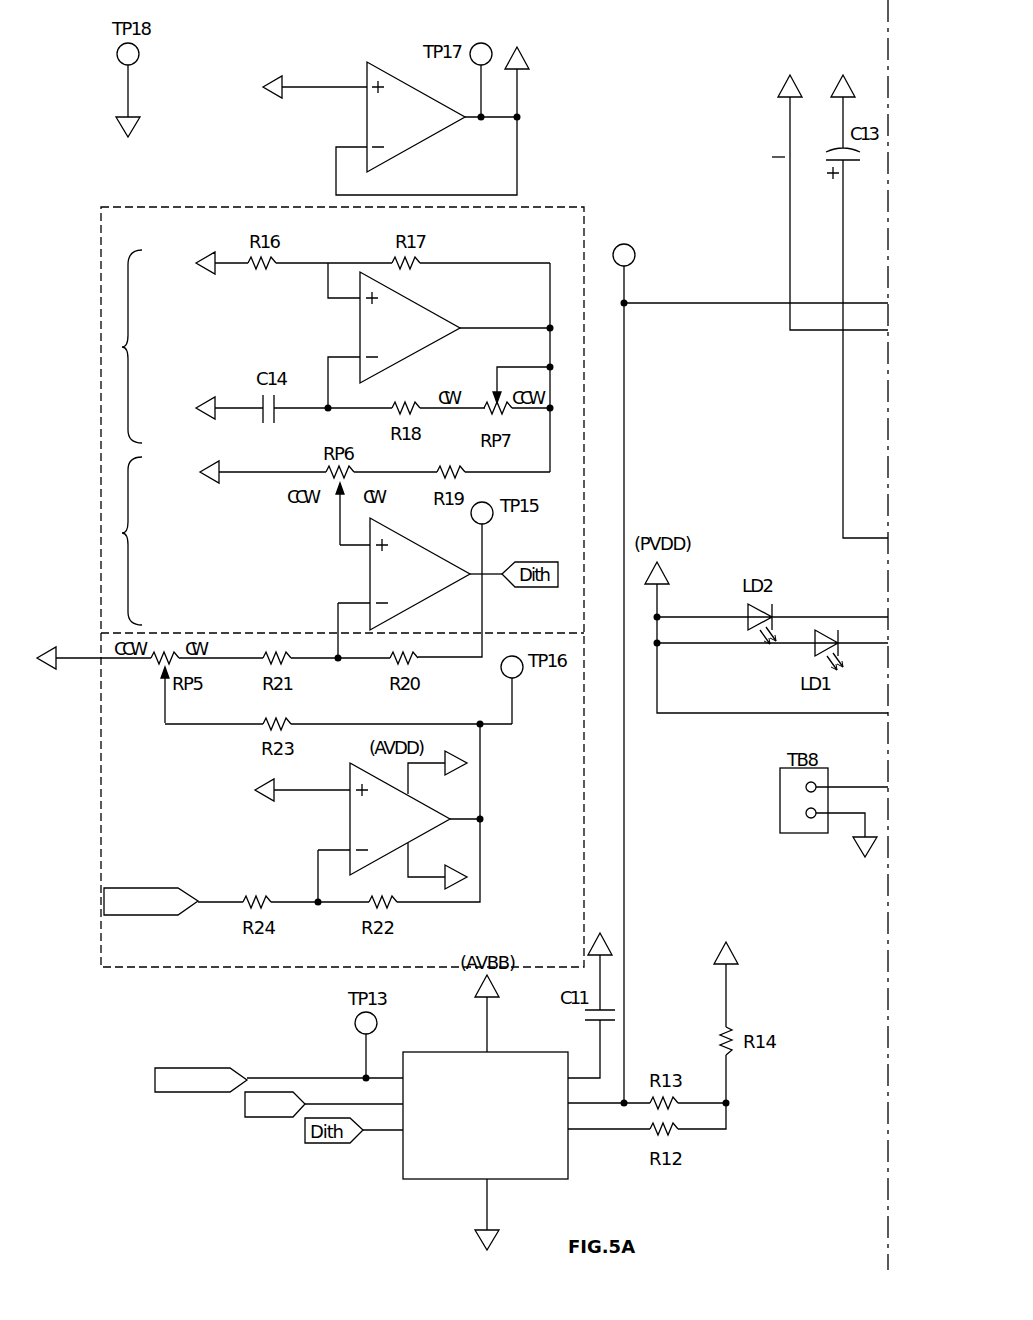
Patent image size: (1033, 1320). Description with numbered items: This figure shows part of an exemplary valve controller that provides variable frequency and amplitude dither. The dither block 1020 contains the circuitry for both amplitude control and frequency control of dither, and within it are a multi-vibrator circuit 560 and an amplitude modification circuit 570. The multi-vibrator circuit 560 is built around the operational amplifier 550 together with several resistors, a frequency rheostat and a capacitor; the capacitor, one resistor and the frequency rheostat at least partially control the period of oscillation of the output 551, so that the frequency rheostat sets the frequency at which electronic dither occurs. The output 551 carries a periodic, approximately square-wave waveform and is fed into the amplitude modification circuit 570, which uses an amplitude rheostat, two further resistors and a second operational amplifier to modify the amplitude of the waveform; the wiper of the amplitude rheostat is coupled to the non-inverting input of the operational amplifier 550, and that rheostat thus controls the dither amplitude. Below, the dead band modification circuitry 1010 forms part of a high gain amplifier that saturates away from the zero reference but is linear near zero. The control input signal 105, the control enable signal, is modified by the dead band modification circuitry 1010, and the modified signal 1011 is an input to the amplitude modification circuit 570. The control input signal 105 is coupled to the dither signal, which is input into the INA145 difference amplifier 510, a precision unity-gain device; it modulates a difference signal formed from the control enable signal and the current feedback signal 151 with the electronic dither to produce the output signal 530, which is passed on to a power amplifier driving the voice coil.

The dither module block 1020 is at (160, 243).
The multi-vibrator circuit 560 is at (122, 347).
The amplitude modification circuit 570 is at (122, 533).
The operational amplifier 550 is at (410, 300).
The output 551 is at (551, 435).
The output signal 530 is at (625, 456).
The dead band modification circuitry 1010 is at (175, 801).
The modified signal 1011 is at (481, 792).
The control input signal 105 is at (145, 916).
The current signal Curr 151 is at (258, 1118).
The INA145 510 is at (440, 1180).